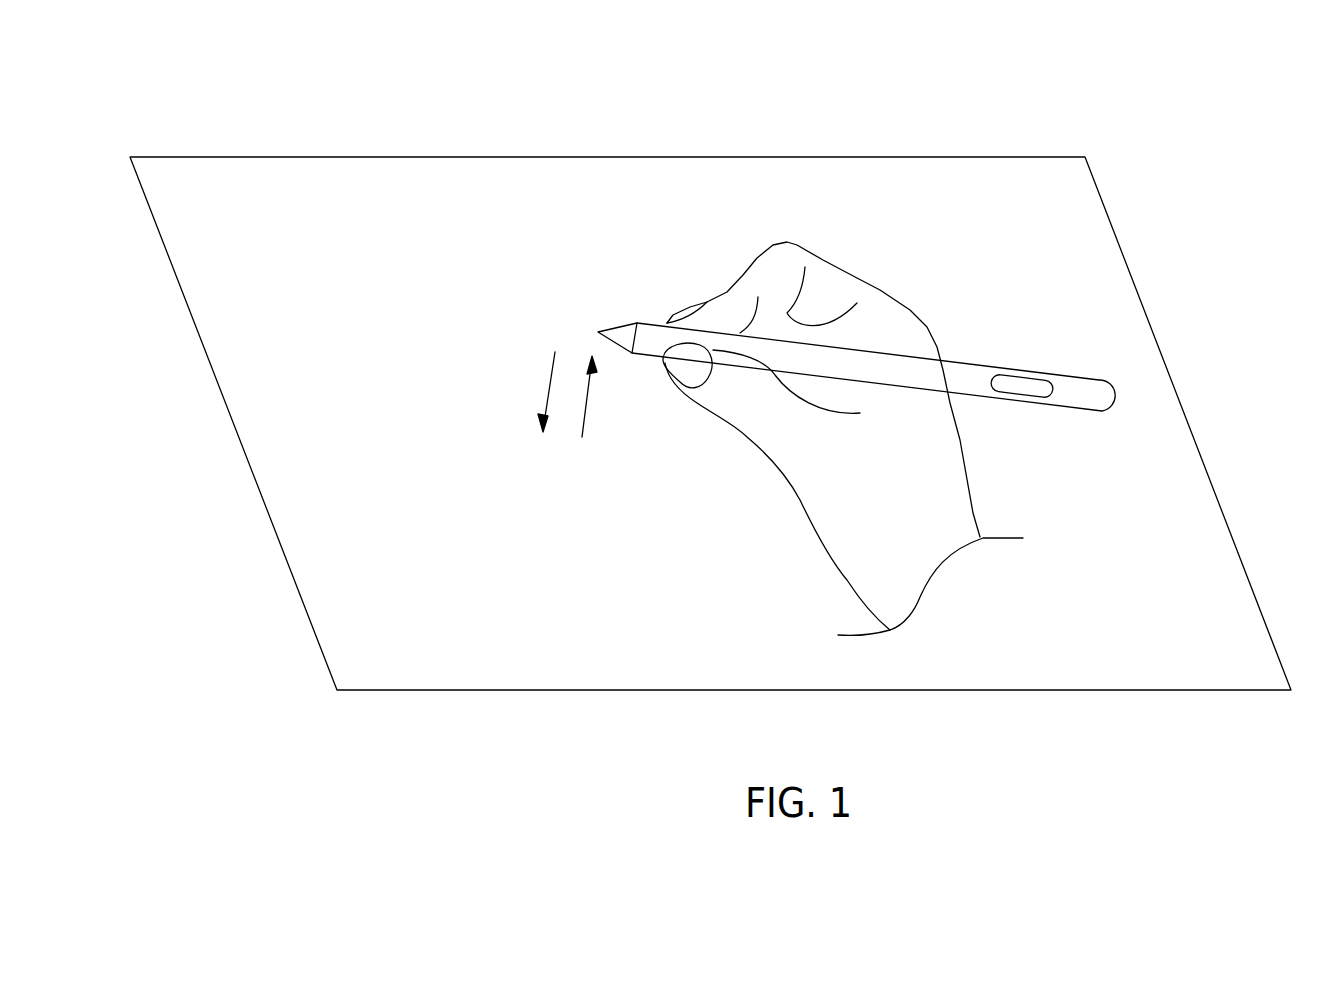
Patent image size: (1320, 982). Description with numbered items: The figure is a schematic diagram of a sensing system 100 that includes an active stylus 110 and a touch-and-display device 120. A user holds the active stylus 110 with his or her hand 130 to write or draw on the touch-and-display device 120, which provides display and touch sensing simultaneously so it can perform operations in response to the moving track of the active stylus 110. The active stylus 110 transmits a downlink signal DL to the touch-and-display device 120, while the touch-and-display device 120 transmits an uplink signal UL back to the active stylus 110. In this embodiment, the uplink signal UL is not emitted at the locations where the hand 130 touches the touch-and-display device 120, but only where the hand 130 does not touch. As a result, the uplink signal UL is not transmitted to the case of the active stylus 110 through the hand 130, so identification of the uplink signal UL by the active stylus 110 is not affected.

The sensing system 100 is at (159, 80).
The active stylus 110 is at (1097, 390).
The touch-and-display device 120 is at (1097, 184).
The hand 130 is at (835, 285).
The downlink signal DL is at (549, 378).
The uplink signal UL is at (587, 407).